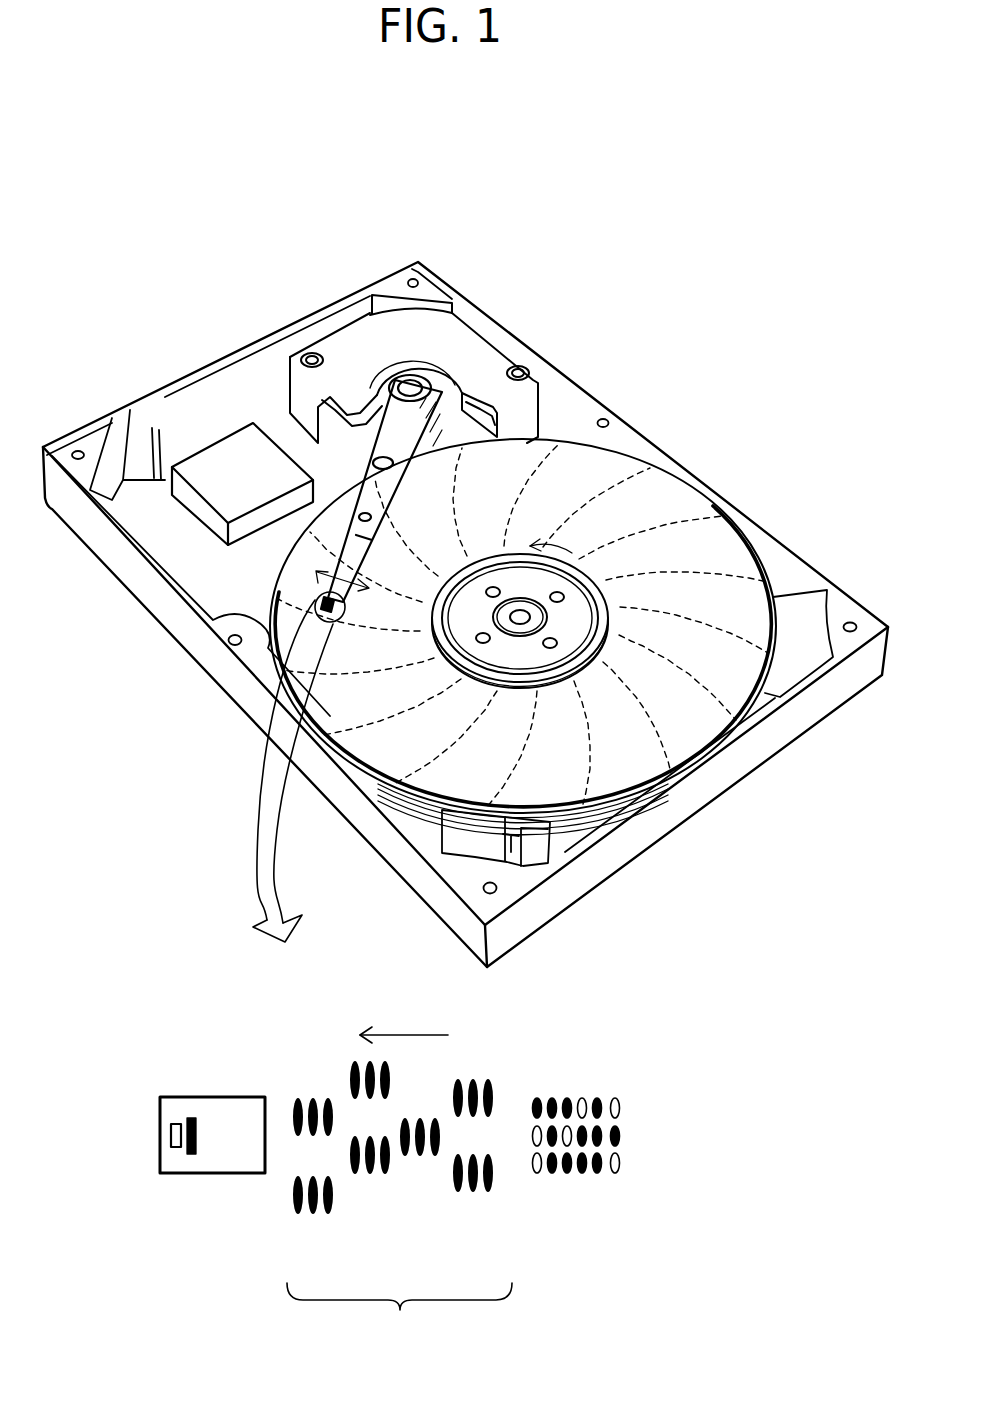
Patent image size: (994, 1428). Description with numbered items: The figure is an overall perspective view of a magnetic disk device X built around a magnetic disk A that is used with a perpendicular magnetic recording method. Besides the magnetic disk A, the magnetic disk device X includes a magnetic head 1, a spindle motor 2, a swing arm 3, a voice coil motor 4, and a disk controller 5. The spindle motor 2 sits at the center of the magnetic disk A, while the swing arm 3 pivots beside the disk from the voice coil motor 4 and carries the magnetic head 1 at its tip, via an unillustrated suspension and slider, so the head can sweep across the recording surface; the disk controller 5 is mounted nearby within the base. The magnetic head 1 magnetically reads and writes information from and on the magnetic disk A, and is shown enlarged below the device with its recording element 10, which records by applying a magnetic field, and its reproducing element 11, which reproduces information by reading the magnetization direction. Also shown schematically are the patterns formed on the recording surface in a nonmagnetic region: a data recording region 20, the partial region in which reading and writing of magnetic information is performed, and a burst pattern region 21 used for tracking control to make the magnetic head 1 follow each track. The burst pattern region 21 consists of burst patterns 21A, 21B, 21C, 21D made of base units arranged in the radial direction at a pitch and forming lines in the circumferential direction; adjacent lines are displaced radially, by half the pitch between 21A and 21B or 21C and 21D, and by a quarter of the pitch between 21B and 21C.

The magnetic disk device X is at (393, 237).
The spindle motor 2 is at (568, 620).
The swing arm 3 is at (375, 487).
The voice coil motor 4 is at (478, 348).
The disk controller 5 is at (218, 455).
The magnetic disk A is at (652, 497).
The magnetic head 1 is at (176, 1097).
The recording element 10 is at (176, 1148).
The reproducing element 11 is at (192, 1155).
The data recording region 20 is at (622, 1182).
The burst pattern region 21 is at (399, 1317).
The burst pattern 21A is at (335, 1222).
The burst pattern 21B is at (390, 1222).
The burst pattern 21C is at (445, 1222).
The burst pattern 21D is at (498, 1222).